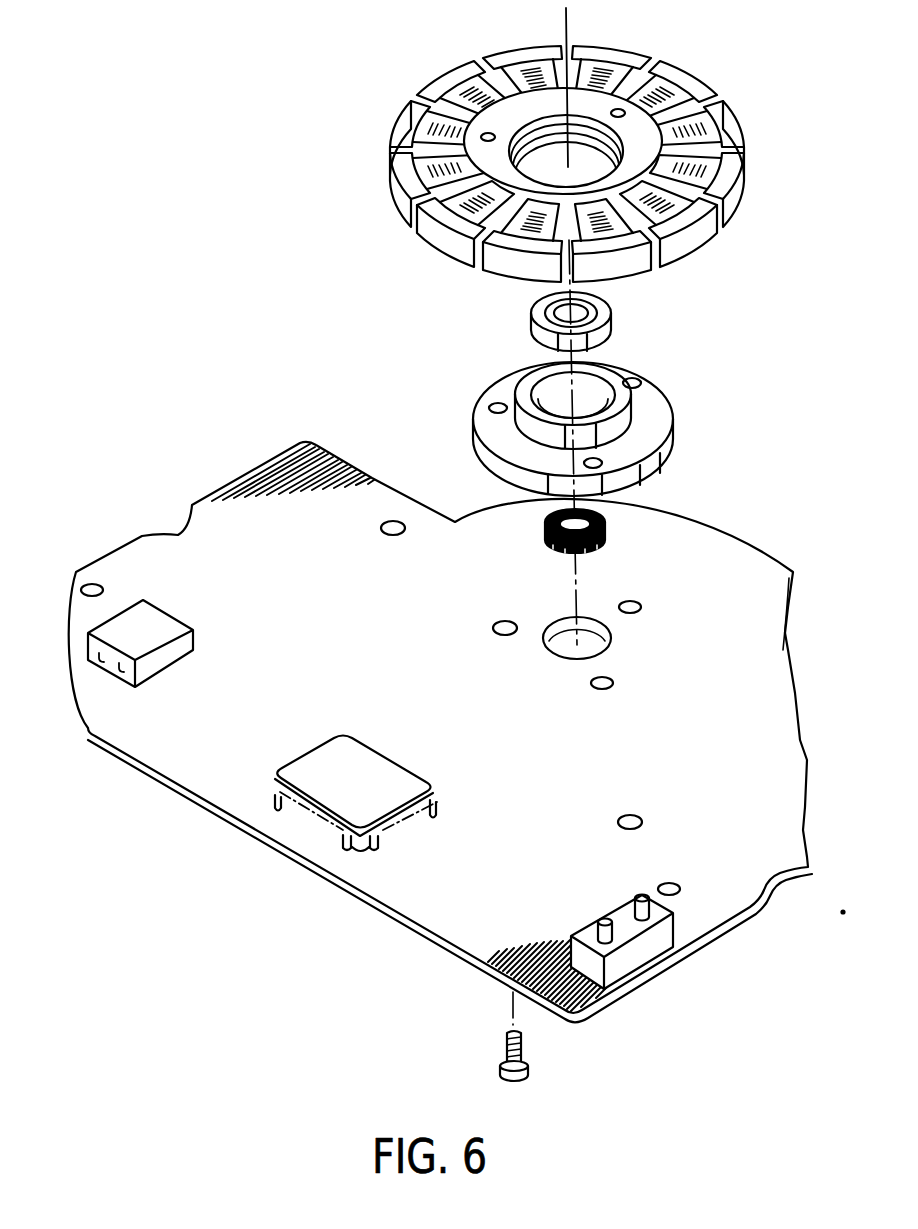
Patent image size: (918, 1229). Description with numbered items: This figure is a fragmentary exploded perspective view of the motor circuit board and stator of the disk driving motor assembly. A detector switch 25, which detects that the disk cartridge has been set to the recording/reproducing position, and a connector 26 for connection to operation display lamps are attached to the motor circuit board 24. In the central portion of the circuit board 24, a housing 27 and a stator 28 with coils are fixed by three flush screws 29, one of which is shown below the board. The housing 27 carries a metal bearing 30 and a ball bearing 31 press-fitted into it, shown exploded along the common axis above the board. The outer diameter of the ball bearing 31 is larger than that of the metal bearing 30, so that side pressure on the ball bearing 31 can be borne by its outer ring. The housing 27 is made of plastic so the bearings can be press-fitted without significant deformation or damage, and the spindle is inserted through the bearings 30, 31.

The motor circuit board 24 is at (393, 892).
The detector switch 25 is at (653, 952).
The connector 26 is at (103, 664).
The housing 27 is at (662, 418).
The stator 28 is at (733, 112).
The flush screws 29 is at (530, 1070).
The metal bearing 30 is at (606, 520).
The ball bearing 31 is at (608, 315).